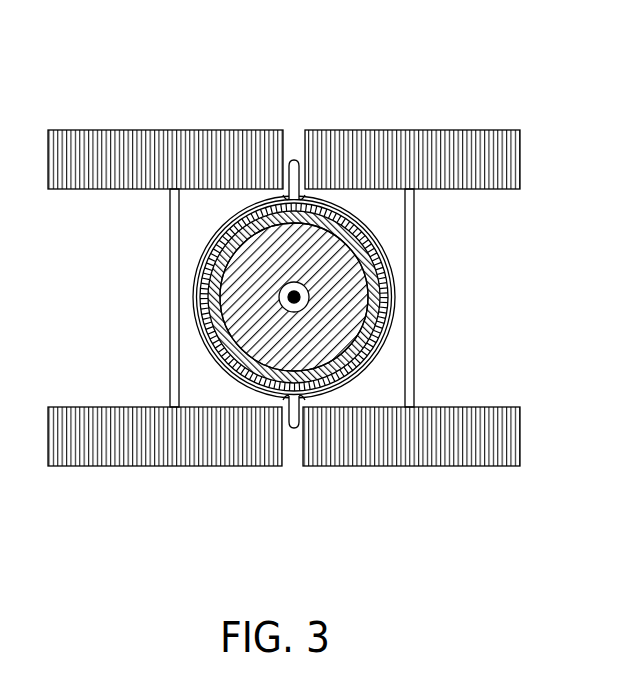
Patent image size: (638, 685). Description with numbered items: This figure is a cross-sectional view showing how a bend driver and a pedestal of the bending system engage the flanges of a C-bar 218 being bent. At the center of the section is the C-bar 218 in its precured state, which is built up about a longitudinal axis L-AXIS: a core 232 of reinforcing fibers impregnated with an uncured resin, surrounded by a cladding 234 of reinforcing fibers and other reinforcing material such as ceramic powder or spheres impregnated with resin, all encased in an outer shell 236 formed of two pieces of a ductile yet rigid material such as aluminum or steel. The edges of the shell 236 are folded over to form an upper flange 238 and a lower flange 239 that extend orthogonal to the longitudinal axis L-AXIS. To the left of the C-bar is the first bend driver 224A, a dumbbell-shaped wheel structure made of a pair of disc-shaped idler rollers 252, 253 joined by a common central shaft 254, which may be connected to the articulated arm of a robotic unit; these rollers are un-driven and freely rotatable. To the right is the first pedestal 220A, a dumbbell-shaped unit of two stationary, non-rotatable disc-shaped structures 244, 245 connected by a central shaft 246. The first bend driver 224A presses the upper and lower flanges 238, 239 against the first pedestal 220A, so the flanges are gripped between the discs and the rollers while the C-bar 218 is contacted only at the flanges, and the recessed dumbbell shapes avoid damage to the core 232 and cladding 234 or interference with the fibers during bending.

The disc-shaped roller 252 is at (93, 143).
The disc-shaped structure 244 is at (455, 140).
The disc-shaped roller 253 is at (115, 453).
The disc-shaped structure 245 is at (455, 455).
The central shaft 254 is at (174, 223).
The central shaft 246 is at (412, 233).
The outer shell 236 is at (380, 354).
The cladding 234 is at (367, 312).
The core 232 is at (355, 290).
The C-bar 218 is at (236, 330).
The longitudinal axis L-AXIS is at (290, 298).
The upper flange 238 is at (292, 160).
The lower flange 239 is at (292, 430).
The first bend driver 224A is at (224, 118).
The first pedestal 220A is at (361, 118).